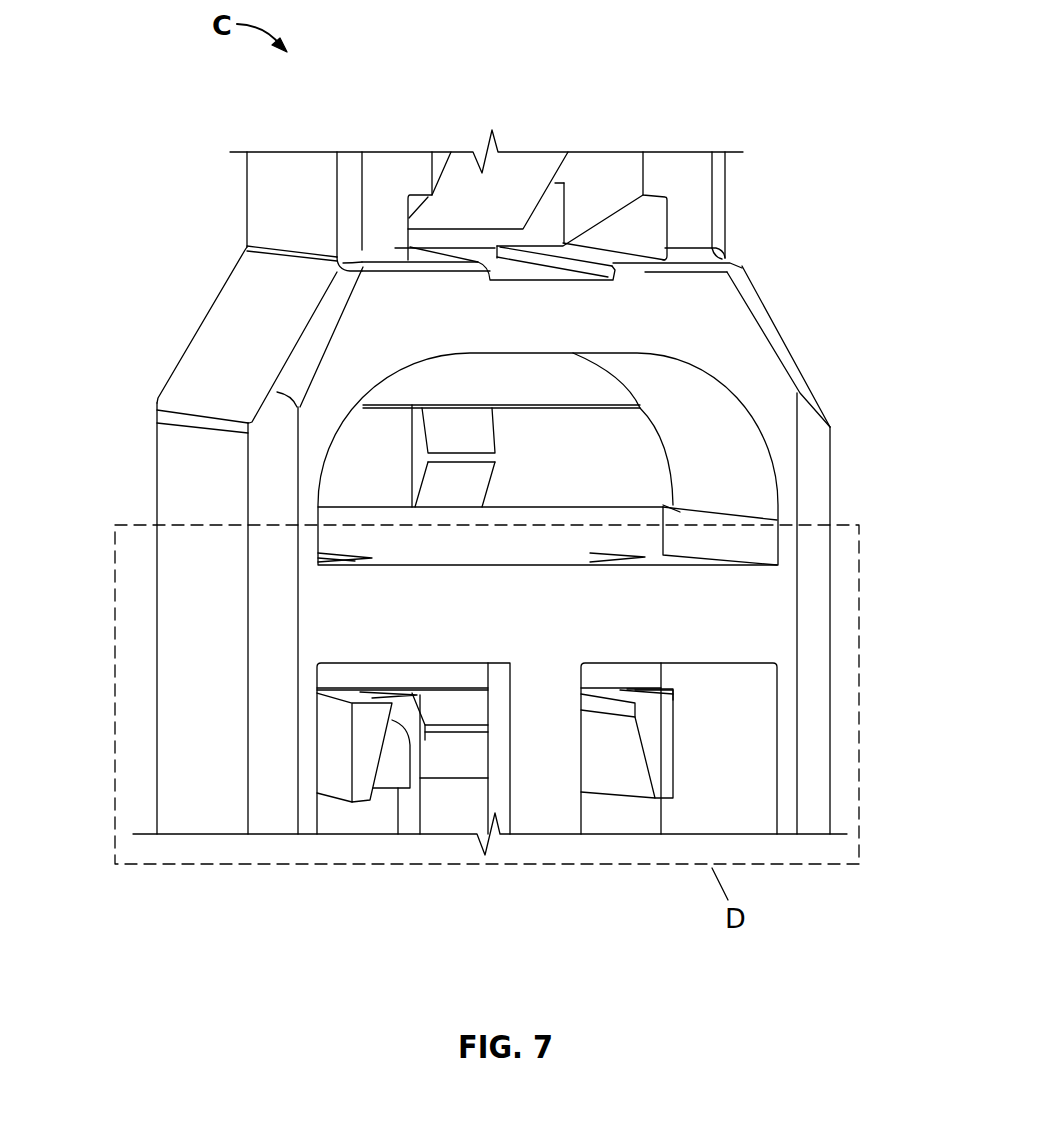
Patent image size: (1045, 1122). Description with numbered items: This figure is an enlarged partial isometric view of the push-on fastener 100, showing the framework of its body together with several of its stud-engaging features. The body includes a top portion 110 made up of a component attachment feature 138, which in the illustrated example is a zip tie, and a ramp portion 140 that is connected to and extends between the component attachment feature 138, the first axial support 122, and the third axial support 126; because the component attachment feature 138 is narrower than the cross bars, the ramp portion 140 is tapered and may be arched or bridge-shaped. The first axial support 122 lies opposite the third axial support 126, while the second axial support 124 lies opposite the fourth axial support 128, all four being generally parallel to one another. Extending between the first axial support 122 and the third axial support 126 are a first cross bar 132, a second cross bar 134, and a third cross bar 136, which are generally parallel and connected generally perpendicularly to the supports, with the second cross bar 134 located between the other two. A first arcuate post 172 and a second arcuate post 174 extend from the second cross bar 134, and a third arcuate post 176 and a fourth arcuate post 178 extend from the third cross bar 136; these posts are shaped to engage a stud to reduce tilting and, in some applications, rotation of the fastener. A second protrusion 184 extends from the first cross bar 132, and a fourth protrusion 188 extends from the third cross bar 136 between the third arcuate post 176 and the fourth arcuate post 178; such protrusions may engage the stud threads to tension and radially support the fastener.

The push-on fastener 100 is at (263, 114).
The top portion 110 is at (298, 206).
The component attachment feature 138 is at (690, 207).
The ramp portion 140 is at (253, 372).
The first arcuate post 172 is at (372, 560).
The second protrusion 184 is at (490, 458).
The first cross bar 132 is at (600, 453).
The second arcuate post 174 is at (638, 562).
The second cross bar 134 is at (765, 626).
The third cross bar 136 is at (665, 688).
The fourth arcuate post 178 is at (655, 750).
The third arcuate post 176 is at (370, 727).
The first axial support 122 is at (184, 813).
The fourth axial support 128 is at (435, 813).
The fourth protrusion 188 is at (468, 728).
The second axial support 124 is at (558, 815).
The third axial support 126 is at (802, 810).